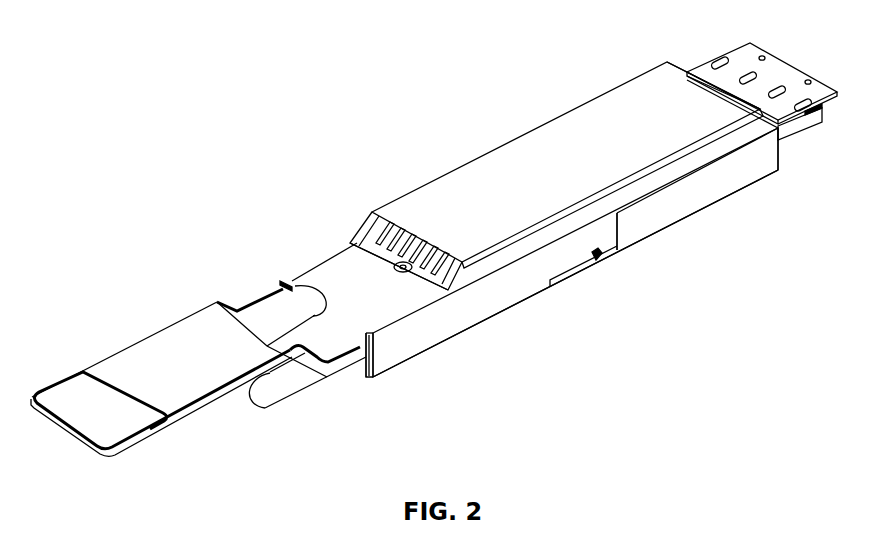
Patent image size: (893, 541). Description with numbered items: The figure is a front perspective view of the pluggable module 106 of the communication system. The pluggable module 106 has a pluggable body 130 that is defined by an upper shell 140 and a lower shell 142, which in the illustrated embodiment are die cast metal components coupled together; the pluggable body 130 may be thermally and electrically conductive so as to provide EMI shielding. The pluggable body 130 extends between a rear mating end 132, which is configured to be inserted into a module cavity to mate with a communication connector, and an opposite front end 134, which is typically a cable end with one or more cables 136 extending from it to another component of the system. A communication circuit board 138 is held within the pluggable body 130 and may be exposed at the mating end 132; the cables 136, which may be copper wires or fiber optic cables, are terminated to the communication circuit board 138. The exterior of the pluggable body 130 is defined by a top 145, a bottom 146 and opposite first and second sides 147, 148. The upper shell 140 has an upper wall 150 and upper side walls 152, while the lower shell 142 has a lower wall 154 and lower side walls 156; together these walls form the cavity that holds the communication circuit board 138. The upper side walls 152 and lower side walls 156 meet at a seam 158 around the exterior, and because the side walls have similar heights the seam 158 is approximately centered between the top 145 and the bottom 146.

The pluggable module 106 is at (288, 180).
The pluggable body 130 is at (672, 208).
The mating end 132 is at (807, 72).
The front end 134 is at (363, 378).
The cables 136 is at (267, 315).
The communication circuit board 138 is at (827, 123).
The upper shell 140 is at (540, 242).
The lower shell 142 is at (580, 248).
The top 145 is at (697, 72).
The bottom 146 is at (720, 200).
The first side 147 is at (313, 263).
The second side 148 is at (623, 228).
The upper wall 150 is at (648, 92).
The upper side walls 152 is at (723, 137).
The lower wall 154 is at (657, 230).
The lower side walls 156 is at (747, 170).
The seam 158 is at (640, 207).